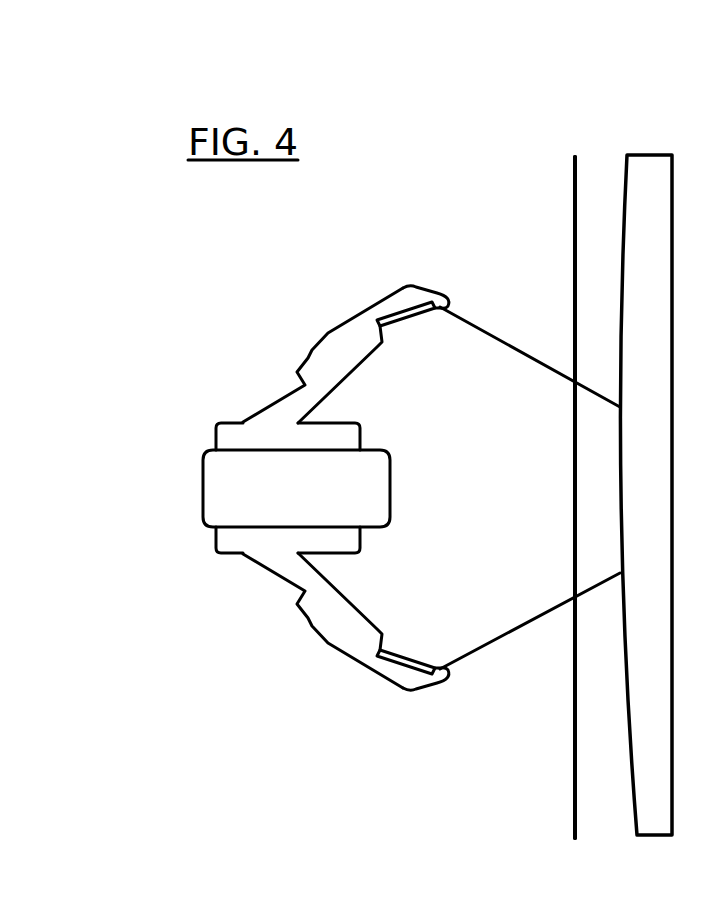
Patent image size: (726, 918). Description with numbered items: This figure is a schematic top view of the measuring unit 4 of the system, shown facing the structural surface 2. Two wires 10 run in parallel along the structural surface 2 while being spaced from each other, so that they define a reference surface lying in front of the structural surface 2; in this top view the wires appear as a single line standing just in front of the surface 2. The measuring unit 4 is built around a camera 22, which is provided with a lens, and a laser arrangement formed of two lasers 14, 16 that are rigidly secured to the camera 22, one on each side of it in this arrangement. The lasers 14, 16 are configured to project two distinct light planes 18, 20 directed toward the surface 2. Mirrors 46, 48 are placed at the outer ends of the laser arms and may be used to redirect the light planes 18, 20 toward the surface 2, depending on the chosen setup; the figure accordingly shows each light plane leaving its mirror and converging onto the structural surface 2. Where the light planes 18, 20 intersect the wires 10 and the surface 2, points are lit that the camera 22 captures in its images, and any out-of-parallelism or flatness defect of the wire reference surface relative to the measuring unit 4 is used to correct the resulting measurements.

The structural surface 2 is at (643, 195).
The measuring unit 4 is at (160, 413).
The wire 10 is at (572, 232).
The laser 14 is at (323, 628).
The laser 16 is at (327, 337).
The light plane 18 is at (500, 638).
The light plane 20 is at (514, 347).
The camera 22 is at (220, 500).
The mirror 46 is at (440, 670).
The mirror 48 is at (438, 309).